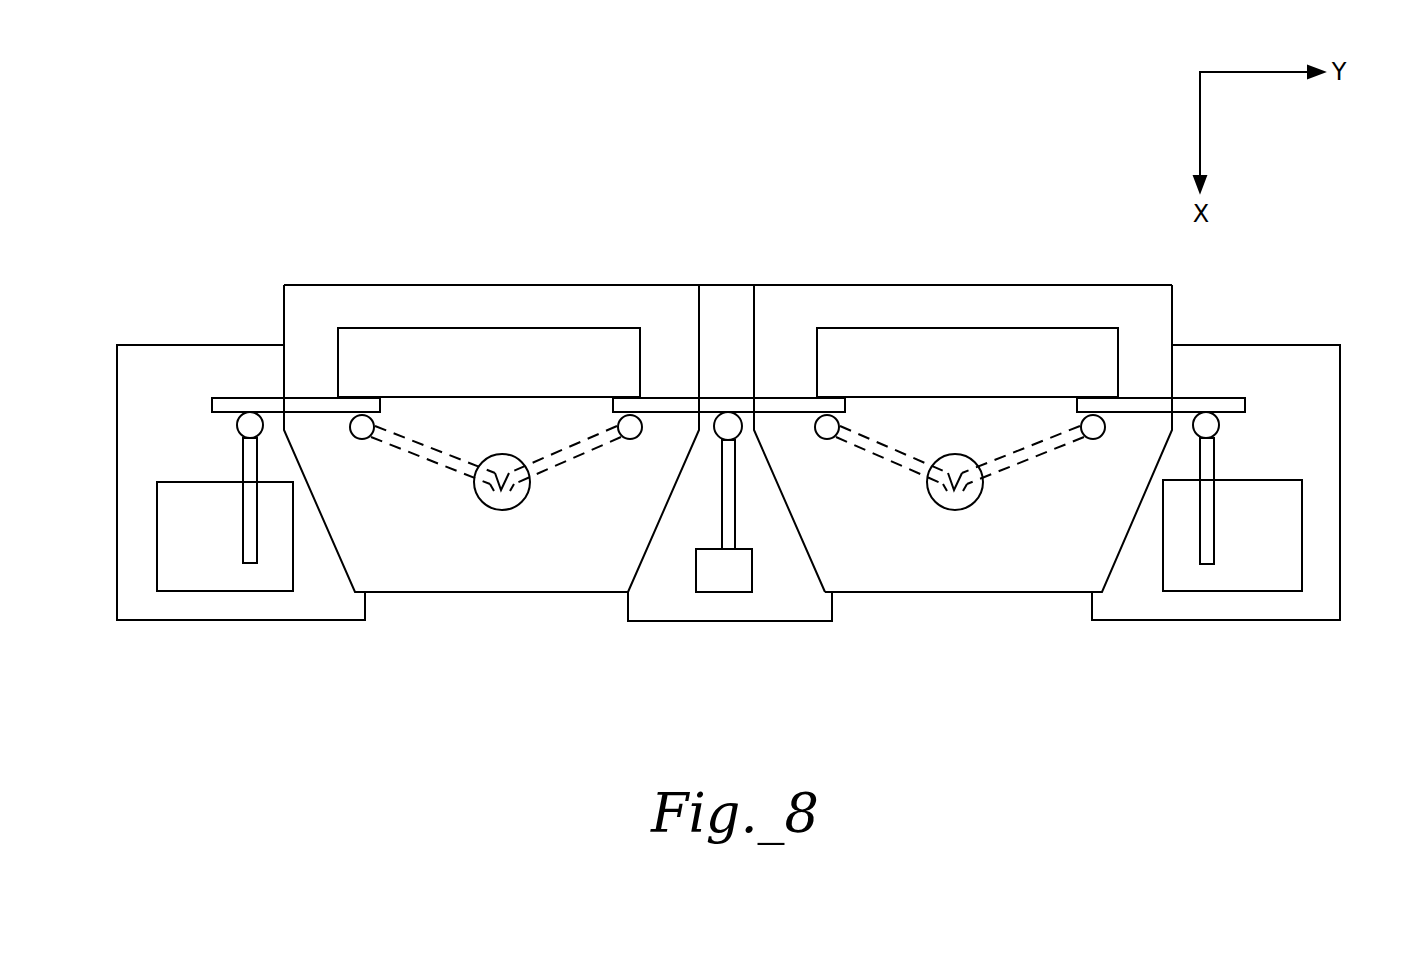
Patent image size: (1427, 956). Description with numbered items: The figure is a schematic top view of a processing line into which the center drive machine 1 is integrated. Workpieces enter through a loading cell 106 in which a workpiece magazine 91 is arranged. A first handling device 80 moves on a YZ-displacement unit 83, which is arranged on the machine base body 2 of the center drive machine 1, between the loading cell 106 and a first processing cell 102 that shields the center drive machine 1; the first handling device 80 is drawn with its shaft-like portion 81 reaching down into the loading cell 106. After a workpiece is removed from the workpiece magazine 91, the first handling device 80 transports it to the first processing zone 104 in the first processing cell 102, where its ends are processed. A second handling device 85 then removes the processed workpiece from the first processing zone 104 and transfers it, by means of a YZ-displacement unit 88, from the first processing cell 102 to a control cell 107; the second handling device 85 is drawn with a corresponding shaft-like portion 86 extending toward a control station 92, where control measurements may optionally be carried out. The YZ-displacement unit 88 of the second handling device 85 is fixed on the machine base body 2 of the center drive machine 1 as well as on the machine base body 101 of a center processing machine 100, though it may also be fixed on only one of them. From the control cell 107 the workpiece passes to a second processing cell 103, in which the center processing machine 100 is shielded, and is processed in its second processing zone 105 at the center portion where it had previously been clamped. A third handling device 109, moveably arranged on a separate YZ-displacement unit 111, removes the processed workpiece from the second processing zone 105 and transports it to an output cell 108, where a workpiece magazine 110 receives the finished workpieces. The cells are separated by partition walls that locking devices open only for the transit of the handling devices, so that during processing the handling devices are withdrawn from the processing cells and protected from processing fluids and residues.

The center drive machine 1 is at (415, 305).
The machine base body 2 is at (540, 328).
The first handling device 80 is at (243, 462).
The first shaft end 81 is at (256, 558).
The YZ-displacement unit 83 is at (223, 397).
The second handling device 85 is at (723, 438).
The center guide shaft 86 is at (715, 437).
The YZ-displacement unit 88 is at (678, 402).
The workpiece magazine 91 is at (210, 579).
The control station 92 is at (715, 582).
The center processing machine 100 is at (950, 308).
The machine base body 101 is at (832, 352).
The first processing cell 102 is at (323, 285).
The second processing cell 103 is at (1083, 285).
The first processing zone 104 is at (490, 508).
The second processing zone 105 is at (973, 505).
The loading cell 106 is at (230, 345).
The control cell 107 is at (803, 627).
The output cell 108 is at (1227, 344).
The third handling device 109 is at (1215, 462).
The workpiece magazine 110 is at (1248, 578).
The YZ-displacement unit 111 is at (1233, 398).